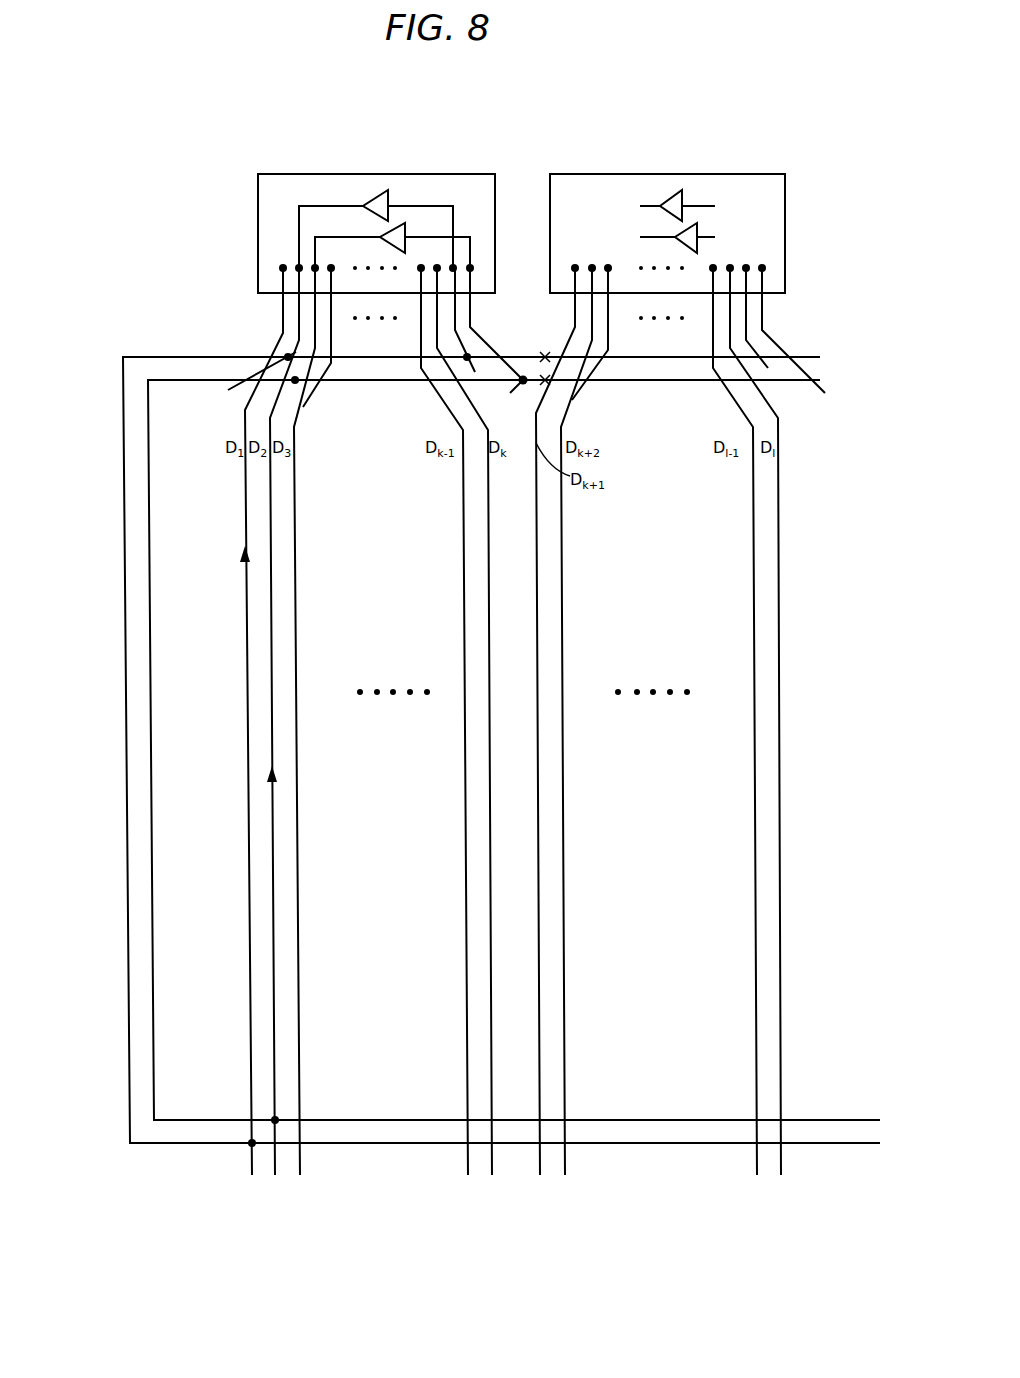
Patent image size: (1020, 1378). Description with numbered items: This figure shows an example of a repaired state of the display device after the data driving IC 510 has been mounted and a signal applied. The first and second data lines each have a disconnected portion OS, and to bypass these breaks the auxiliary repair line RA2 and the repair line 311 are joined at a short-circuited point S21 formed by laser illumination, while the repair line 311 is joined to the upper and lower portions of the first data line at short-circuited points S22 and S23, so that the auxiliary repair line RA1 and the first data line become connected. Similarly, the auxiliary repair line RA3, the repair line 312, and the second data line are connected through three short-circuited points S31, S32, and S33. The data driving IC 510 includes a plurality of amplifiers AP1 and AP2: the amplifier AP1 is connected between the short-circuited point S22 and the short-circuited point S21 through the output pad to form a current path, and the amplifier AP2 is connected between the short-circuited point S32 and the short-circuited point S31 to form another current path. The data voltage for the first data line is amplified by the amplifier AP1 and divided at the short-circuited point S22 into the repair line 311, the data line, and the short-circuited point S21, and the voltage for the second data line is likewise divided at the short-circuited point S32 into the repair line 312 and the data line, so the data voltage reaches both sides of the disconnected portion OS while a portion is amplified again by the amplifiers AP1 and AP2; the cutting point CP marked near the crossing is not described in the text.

The data driving IC 510 is at (550, 174).
The repair line 311 is at (123, 482).
The repair line 312 is at (148, 538).
The amplifier AP1 is at (375, 197).
The amplifier AP2 is at (398, 223).
The auxiliary repair line RA1 is at (283, 290).
The auxiliary repair line RA2 is at (455, 283).
The auxiliary repair line RA3 is at (470, 310).
The short-circuited point S21 is at (467, 357).
The short-circuited point S22 is at (288, 357).
The short-circuited point S23 is at (252, 1143).
The short-circuited point S31 is at (523, 380).
The short-circuited point S32 is at (295, 380).
The short-circuited point S33 is at (275, 1120).
The cutting point CP is at (560, 371).
The disconnected portion OS is at (238, 560).